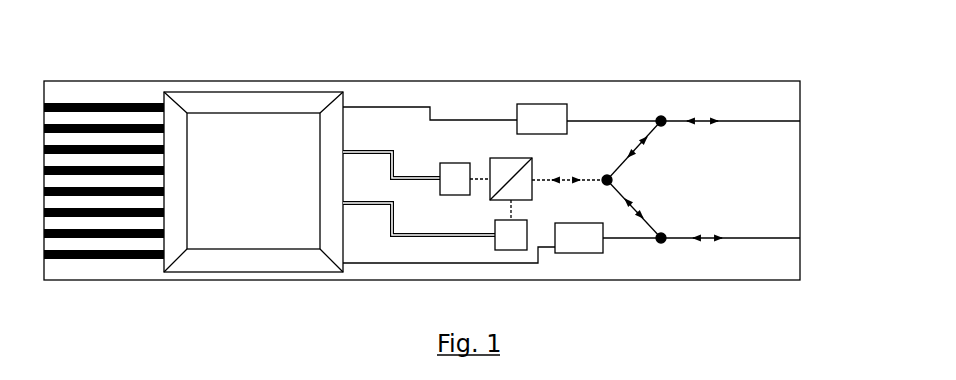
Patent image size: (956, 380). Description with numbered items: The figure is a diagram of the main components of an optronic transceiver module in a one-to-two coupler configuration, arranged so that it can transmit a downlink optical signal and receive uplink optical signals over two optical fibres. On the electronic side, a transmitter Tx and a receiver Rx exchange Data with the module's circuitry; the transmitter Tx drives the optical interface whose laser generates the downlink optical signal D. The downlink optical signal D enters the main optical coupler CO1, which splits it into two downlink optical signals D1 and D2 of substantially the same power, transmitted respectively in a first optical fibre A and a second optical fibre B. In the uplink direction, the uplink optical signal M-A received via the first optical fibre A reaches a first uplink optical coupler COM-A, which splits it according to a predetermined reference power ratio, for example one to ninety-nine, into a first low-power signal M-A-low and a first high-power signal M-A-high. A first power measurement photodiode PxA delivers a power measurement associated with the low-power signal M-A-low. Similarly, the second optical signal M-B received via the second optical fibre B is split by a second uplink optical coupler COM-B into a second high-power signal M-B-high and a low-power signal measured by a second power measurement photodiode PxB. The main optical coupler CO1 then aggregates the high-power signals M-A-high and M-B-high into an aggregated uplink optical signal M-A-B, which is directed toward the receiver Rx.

The first uplink optical coupler COM-A is at (661, 121).
The second uplink optical coupler COM-B is at (661, 243).
The main optical coupler CO1 is at (627, 181).
The first optical fibre A is at (693, 120).
The second optical fibre B is at (711, 237).
The first power measurement photodiode PxA is at (542, 119).
The second power measurement photodiode PxB is at (579, 238).
The transmitter Tx is at (455, 179).
The receiver Rx is at (511, 235).
The data bus Data is at (419, 193).
The downlink optical signal D is at (587, 167).
The first downlink optical signal D1 is at (782, 114).
The second downlink optical signal D2 is at (785, 232).
The uplink optical signal M-A is at (777, 151).
The second optical signal M-B is at (783, 249).
The first low-power signal M-A-low is at (640, 112).
The first high-power signal M-A-high is at (650, 126).
The second high-power signal M-B-high is at (647, 243).
The aggregated uplink optical signal M-A-B is at (580, 192).